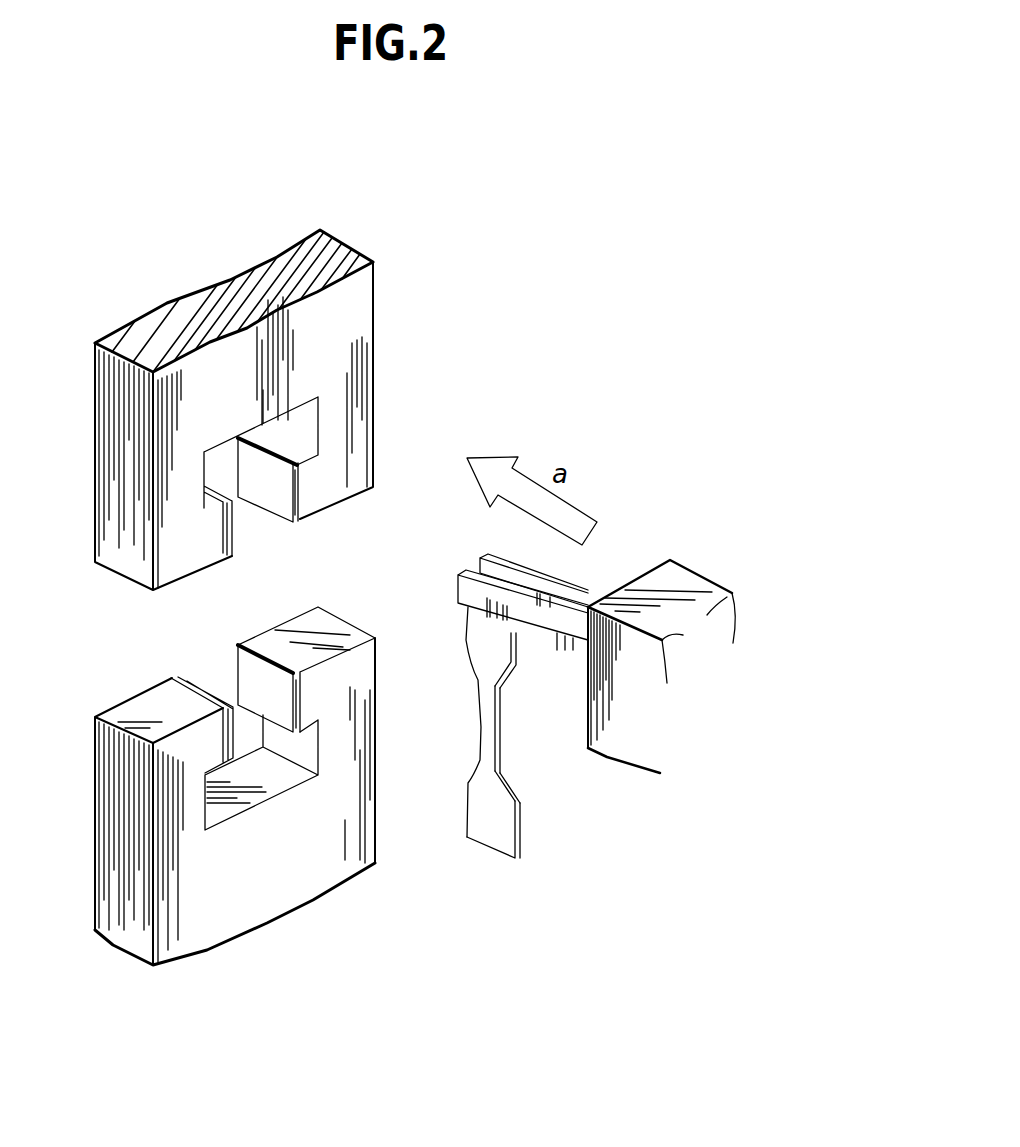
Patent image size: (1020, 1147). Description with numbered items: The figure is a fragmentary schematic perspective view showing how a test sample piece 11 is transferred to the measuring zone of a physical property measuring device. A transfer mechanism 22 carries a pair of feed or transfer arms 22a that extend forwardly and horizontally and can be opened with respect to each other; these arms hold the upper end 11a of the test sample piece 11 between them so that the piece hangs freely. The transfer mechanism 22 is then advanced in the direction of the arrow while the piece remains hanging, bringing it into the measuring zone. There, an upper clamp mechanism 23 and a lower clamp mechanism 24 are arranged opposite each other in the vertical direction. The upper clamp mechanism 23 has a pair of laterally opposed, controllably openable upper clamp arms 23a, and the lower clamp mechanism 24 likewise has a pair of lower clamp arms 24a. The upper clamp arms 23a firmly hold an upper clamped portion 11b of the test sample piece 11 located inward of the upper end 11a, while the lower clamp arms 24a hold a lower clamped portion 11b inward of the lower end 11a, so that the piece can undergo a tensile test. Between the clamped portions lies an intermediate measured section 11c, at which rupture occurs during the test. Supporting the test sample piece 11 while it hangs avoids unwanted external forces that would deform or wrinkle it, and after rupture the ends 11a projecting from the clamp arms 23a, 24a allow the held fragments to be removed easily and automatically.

The test sample piece 11 is at (492, 850).
The upper end 11a is at (503, 842).
The upper clamped portion 11b is at (497, 647).
The intermediate measured section 11c is at (488, 732).
The transfer mechanism 22 is at (717, 637).
The transfer arms 22a is at (550, 591).
The upper clamp mechanism 23 is at (383, 300).
The upper clamp arms 23a is at (233, 535).
The lower clamp mechanism 24 is at (318, 910).
The lower clamp arms 24a is at (252, 680).